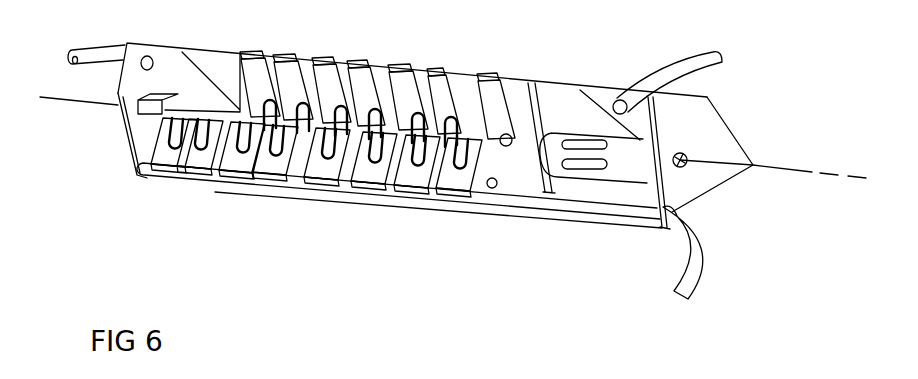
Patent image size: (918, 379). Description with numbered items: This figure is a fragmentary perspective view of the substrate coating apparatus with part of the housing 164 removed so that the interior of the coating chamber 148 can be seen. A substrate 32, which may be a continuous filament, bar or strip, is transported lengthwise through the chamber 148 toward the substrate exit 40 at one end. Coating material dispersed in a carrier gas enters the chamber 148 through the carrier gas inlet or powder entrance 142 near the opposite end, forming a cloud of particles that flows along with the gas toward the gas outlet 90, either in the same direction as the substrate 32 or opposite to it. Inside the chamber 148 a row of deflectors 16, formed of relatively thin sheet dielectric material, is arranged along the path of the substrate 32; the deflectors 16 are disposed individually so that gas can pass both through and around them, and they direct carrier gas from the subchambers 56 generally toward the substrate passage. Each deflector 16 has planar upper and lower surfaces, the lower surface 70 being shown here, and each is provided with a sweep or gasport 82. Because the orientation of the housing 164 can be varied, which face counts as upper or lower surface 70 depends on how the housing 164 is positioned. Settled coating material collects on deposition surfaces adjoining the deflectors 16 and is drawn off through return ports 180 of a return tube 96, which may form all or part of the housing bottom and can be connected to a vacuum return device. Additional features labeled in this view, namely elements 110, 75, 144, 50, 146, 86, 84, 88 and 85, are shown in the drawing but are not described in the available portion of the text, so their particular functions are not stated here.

The support rod 110 is at (85, 47).
The substrate 32 is at (72, 103).
The axis line 75 is at (826, 170).
The chamber 148 is at (224, 60).
The substrate exit 40 is at (128, 118).
The carrier gas inlet or powder entrance 142 is at (148, 60).
The tab 144 is at (147, 113).
The deflectors 16 is at (290, 66).
The sweep or gasport 82 is at (257, 60).
The clip with hole 50 is at (472, 78).
The subchambers 56 is at (345, 68).
The lower surface 70 is at (420, 200).
The return tube 96 is at (393, 190).
The return ports 180 is at (227, 170).
The post 146 is at (532, 190).
The crease 86 is at (582, 96).
The slot 84 is at (578, 173).
The slot 88 is at (598, 173).
The housing 164 is at (709, 98).
The gas outlet 90 is at (623, 88).
The hook arm 85 is at (667, 72).